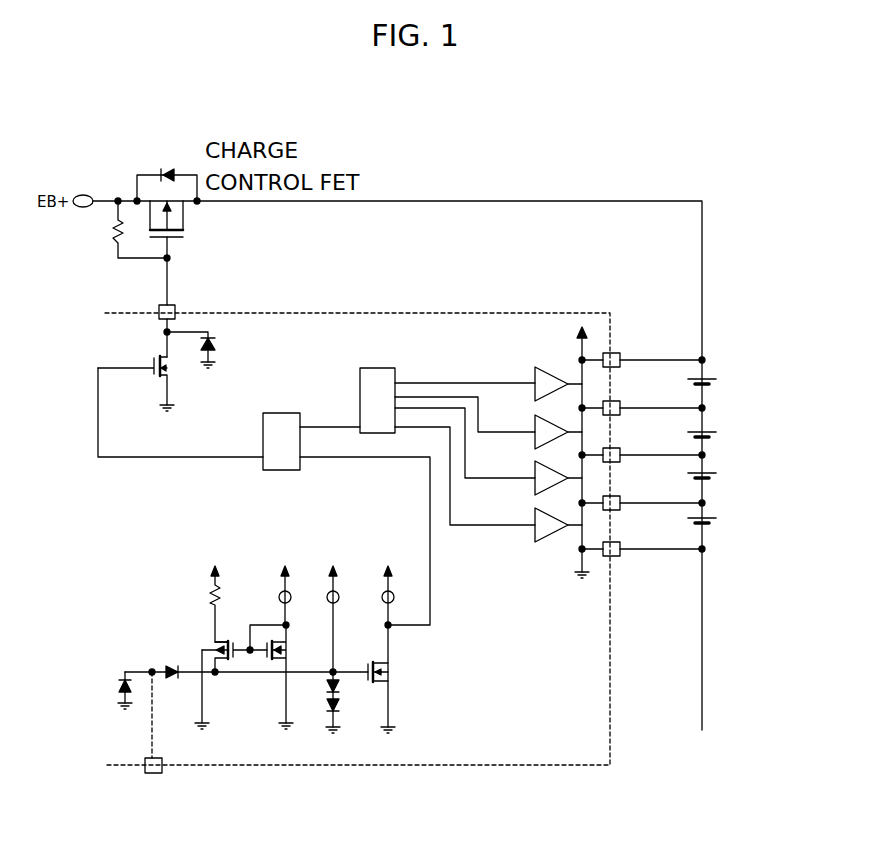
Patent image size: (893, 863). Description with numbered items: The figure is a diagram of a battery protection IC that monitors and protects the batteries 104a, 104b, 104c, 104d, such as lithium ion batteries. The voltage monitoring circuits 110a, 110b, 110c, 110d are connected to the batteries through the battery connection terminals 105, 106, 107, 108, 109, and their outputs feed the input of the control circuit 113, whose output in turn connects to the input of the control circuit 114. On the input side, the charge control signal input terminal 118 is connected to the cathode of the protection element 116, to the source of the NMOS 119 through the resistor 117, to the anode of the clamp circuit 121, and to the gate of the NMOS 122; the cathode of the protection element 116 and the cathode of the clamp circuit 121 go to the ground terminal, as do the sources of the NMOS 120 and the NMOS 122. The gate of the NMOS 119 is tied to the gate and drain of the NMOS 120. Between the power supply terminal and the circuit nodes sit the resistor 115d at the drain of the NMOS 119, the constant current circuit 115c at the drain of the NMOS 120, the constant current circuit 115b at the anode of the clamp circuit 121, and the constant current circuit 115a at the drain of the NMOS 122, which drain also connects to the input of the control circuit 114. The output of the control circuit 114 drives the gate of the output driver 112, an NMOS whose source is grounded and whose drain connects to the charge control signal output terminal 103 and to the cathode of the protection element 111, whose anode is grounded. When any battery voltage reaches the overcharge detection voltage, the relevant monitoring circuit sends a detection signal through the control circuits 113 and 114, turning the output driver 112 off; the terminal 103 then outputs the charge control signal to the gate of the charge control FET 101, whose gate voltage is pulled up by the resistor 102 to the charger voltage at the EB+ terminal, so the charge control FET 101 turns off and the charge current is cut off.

The charge control FET 101 is at (193, 230).
The resistor 102 is at (110, 240).
The charge control signal output terminal 103 is at (176, 306).
The battery 104a is at (713, 380).
The battery 104b is at (713, 432).
The battery 104c is at (713, 473).
The battery 104d is at (713, 518).
The battery connection terminal 105 is at (618, 354).
The battery connection terminal 106 is at (619, 402).
The battery connection terminal 107 is at (619, 462).
The battery connection terminal 108 is at (619, 510).
The battery connection terminal 109 is at (619, 556).
The voltage monitoring circuit 110a is at (543, 372).
The voltage monitoring circuit 110b is at (538, 422).
The voltage monitoring circuit 110c is at (535, 468).
The voltage monitoring circuit 110d is at (537, 517).
The protection element 111 is at (217, 340).
The output driver 112 is at (137, 362).
The control circuit 113 is at (363, 358).
The control circuit 114 is at (248, 463).
The constant current circuit 115a is at (385, 585).
The constant current circuit 115b is at (330, 587).
The constant current circuit 115c is at (280, 580).
The resistor 115d is at (200, 595).
The protection element 116 is at (115, 677).
The resistor 117 is at (163, 682).
The charge control signal input terminal 118 is at (147, 777).
The NMOS 119 is at (223, 663).
The NMOS 120 is at (293, 676).
The clamp circuit 121 is at (345, 692).
The NMOS 122 is at (396, 678).